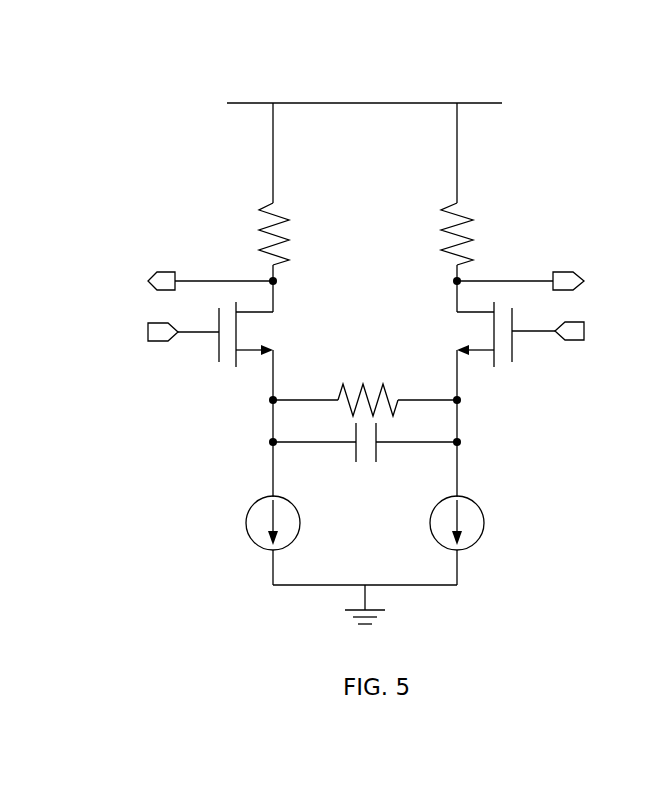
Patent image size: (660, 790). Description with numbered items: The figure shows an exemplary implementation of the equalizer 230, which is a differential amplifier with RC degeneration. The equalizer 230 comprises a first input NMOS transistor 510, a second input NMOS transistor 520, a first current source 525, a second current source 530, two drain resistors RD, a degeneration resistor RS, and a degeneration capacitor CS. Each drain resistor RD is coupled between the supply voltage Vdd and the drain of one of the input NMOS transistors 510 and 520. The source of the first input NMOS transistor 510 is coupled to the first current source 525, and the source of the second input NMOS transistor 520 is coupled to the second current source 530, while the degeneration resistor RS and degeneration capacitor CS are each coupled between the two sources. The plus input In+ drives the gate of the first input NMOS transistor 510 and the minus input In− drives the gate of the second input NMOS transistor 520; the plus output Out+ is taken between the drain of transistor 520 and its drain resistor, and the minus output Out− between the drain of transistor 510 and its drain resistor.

The equalizer 230 is at (373, 349).
The first input NMOS transistor 510 is at (254, 355).
The second input NMOS transistor 520 is at (477, 353).
The first current source 525 is at (265, 498).
The second current source 530 is at (475, 498).